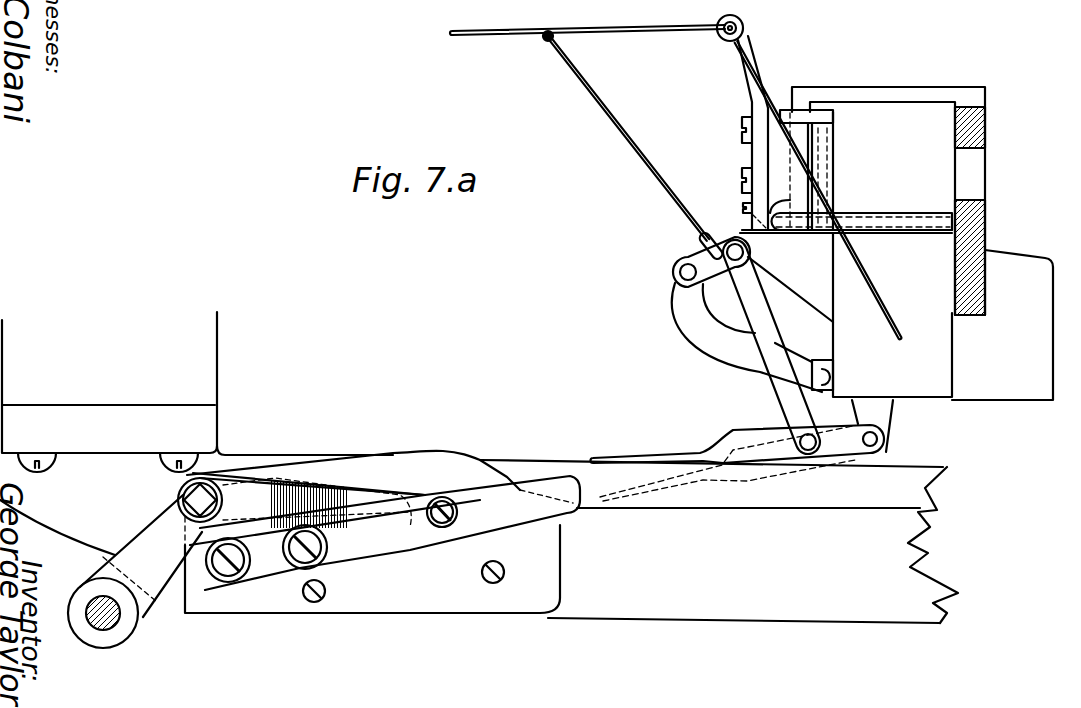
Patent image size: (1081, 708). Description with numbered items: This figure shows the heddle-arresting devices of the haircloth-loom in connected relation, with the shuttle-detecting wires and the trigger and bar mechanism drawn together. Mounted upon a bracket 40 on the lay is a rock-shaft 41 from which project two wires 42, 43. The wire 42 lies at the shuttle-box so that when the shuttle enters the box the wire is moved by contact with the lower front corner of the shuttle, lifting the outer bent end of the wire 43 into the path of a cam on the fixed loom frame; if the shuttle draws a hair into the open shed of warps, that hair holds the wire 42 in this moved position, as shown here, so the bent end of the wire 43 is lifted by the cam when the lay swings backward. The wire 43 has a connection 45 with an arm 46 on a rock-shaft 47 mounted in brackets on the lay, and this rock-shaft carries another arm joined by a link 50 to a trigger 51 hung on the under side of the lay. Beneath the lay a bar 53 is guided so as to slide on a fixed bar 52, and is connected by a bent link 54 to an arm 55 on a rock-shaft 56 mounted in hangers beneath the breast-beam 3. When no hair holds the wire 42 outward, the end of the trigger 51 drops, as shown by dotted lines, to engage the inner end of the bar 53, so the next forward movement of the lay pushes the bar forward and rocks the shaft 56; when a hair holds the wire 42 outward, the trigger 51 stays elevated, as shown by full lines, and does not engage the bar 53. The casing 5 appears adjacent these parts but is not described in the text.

The breast-beam 3 is at (197, 392).
The housing 5 is at (896, 269).
The bracket 40 is at (752, 92).
The rock-shaft 41 is at (744, 25).
The wire 42 is at (836, 306).
The wire 43 is at (619, 29).
The connection 45 is at (656, 177).
The arm 46 is at (698, 256).
The rock-shaft 47 is at (679, 278).
The link 50 is at (758, 302).
The trigger 51 is at (738, 457).
The fixed bar 52 is at (571, 541).
The bar 53 is at (383, 520).
The bent link 54 is at (301, 500).
The arm 55 is at (101, 571).
The rock-shaft 56 is at (120, 616).